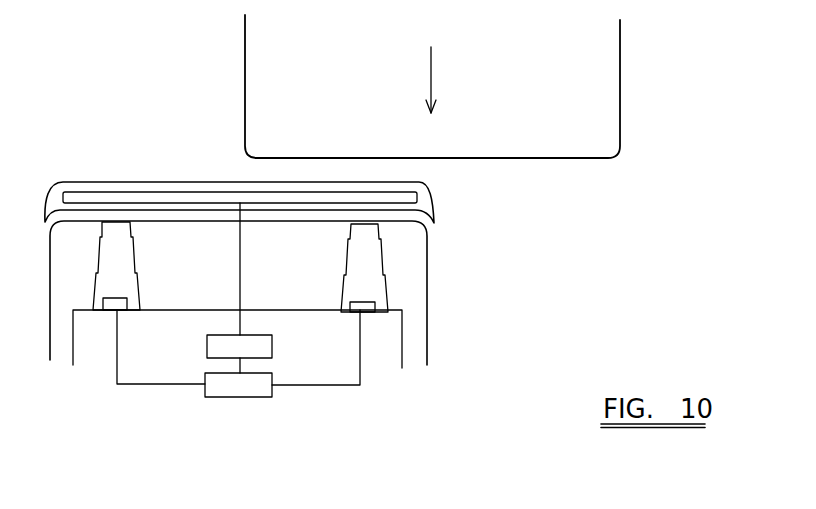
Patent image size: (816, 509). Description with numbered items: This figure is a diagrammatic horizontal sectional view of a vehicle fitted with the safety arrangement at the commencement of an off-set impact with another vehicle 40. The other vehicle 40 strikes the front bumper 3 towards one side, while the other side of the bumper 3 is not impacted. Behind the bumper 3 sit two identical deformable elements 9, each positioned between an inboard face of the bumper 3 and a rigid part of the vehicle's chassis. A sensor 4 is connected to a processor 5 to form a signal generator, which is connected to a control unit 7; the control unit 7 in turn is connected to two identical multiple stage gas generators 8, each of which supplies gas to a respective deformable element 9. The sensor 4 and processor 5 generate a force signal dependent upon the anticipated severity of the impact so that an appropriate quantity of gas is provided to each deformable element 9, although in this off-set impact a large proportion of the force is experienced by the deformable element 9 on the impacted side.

The bumper 3 is at (436, 203).
The sensor 4 is at (188, 190).
The processor 5 is at (272, 350).
The control unit 7 is at (222, 397).
The multiple stage gas generator 8 is at (369, 293).
The deformable element 9 is at (382, 272).
The other vehicle 40 is at (598, 145).